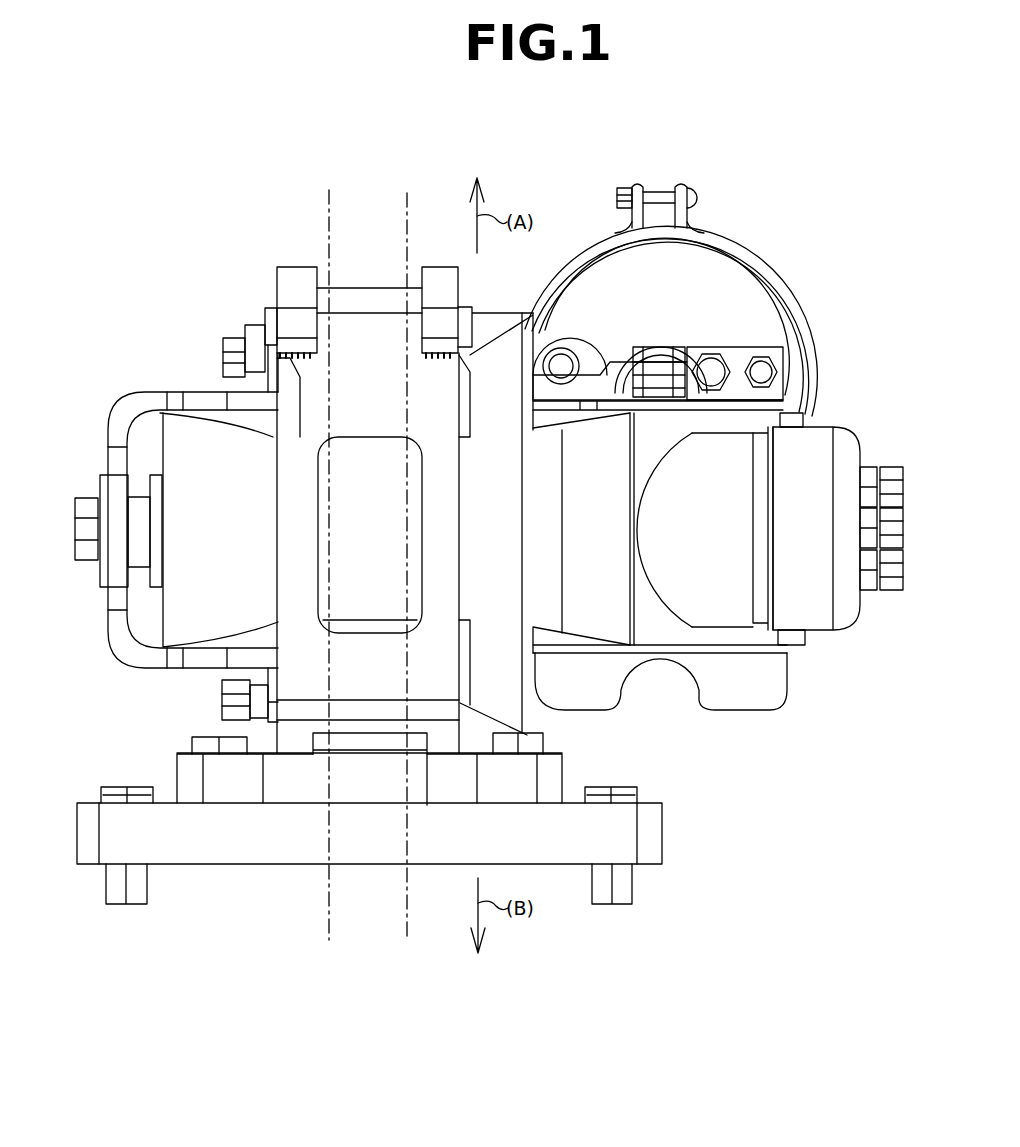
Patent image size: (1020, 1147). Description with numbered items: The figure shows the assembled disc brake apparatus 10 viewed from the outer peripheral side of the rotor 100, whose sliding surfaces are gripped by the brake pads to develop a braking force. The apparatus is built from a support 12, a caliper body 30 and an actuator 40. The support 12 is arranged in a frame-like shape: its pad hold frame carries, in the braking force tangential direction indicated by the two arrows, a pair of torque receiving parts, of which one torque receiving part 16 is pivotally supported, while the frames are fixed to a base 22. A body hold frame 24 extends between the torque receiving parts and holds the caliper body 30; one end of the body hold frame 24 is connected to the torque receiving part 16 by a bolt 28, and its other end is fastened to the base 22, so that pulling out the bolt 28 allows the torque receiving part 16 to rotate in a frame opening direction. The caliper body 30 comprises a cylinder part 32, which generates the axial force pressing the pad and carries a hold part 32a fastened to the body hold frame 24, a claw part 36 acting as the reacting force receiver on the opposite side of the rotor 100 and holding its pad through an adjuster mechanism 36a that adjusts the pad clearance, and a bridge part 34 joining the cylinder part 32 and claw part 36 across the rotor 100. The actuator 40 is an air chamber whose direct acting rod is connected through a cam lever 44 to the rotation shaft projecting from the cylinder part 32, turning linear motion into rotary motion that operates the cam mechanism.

The rotor 100 is at (326, 200).
The disc brake apparatus 10 is at (733, 217).
The support 12 is at (672, 835).
The one torque receiving part 16 is at (300, 283).
The base 22 is at (195, 852).
The body hold frame 24 is at (268, 487).
The bolt 28 is at (270, 320).
The caliper body 30 is at (830, 647).
The cylinder part 32 is at (547, 557).
The hold part 32a is at (500, 357).
The bridge part 34 is at (357, 563).
The claw part 36 is at (187, 447).
The adjuster mechanism 36a is at (83, 532).
The actuator 40 is at (786, 270).
The cam lever 44 is at (590, 378).